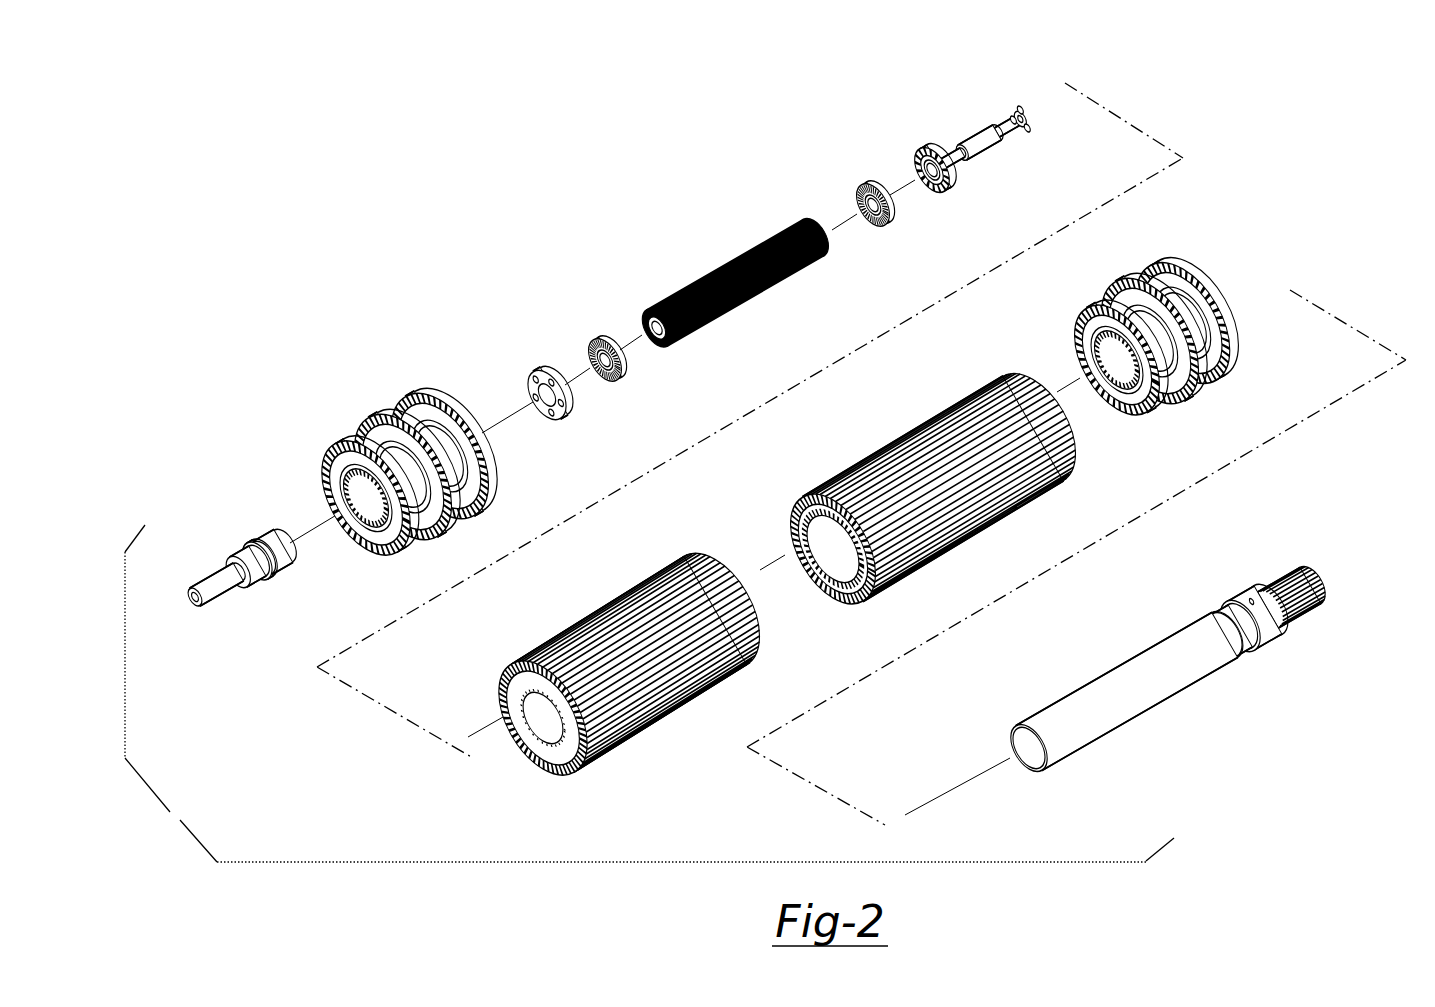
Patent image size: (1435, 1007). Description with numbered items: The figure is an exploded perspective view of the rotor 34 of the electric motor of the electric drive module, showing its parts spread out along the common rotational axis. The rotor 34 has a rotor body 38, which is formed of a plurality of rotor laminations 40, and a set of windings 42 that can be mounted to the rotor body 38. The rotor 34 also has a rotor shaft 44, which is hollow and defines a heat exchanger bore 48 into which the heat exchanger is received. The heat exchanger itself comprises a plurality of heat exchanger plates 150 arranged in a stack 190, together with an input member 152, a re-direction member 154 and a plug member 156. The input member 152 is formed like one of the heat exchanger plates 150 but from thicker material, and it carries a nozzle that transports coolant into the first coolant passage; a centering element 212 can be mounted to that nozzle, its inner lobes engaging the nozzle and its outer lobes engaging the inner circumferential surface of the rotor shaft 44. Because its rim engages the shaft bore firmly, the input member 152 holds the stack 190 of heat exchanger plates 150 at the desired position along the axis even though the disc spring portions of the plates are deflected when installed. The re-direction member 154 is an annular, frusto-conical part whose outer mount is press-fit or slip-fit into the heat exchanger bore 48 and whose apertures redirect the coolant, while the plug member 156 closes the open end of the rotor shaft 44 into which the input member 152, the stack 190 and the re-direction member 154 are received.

The rotor 34 is at (164, 826).
The rotor body 38 is at (603, 757).
The rotor laminations 40 is at (407, 400).
The set of windings 42 is at (947, 413).
The rotor shaft 44 is at (1151, 683).
The heat exchanger bore 48 is at (1023, 738).
The heat exchanger plates 150 is at (609, 380).
The input member 152 is at (935, 148).
The re-direction member 154 is at (545, 372).
The plug member 156 is at (210, 573).
The stack of heat exchanger plates 190 is at (582, 336).
The centering element 212 is at (1014, 101).